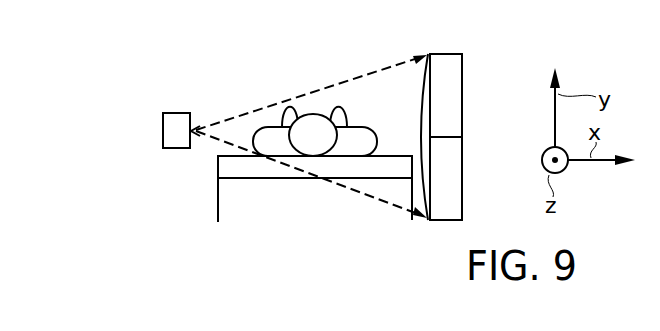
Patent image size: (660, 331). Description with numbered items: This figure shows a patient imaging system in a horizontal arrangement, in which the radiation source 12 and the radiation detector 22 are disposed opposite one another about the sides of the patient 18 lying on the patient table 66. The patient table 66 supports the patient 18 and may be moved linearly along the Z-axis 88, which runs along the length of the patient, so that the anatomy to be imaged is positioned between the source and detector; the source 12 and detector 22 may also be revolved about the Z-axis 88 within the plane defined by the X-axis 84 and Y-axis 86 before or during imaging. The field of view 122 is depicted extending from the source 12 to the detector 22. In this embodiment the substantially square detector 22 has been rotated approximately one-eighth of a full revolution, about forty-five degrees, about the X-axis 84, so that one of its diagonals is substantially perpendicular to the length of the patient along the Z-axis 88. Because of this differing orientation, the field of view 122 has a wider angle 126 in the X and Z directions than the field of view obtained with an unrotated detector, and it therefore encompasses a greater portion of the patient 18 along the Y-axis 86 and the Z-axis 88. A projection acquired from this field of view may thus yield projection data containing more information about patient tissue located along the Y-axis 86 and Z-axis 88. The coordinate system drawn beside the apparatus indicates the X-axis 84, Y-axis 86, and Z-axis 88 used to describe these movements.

The radiation source 12 is at (172, 113).
The field of view 122 is at (275, 108).
The angle 126 is at (221, 125).
The patient 18 is at (377, 128).
The patient table 66 is at (217, 196).
The radiation detector 22 is at (454, 62).
The X-axis 84 is at (601, 163).
The Y-axis 86 is at (552, 102).
The Z-axis 88 is at (542, 160).